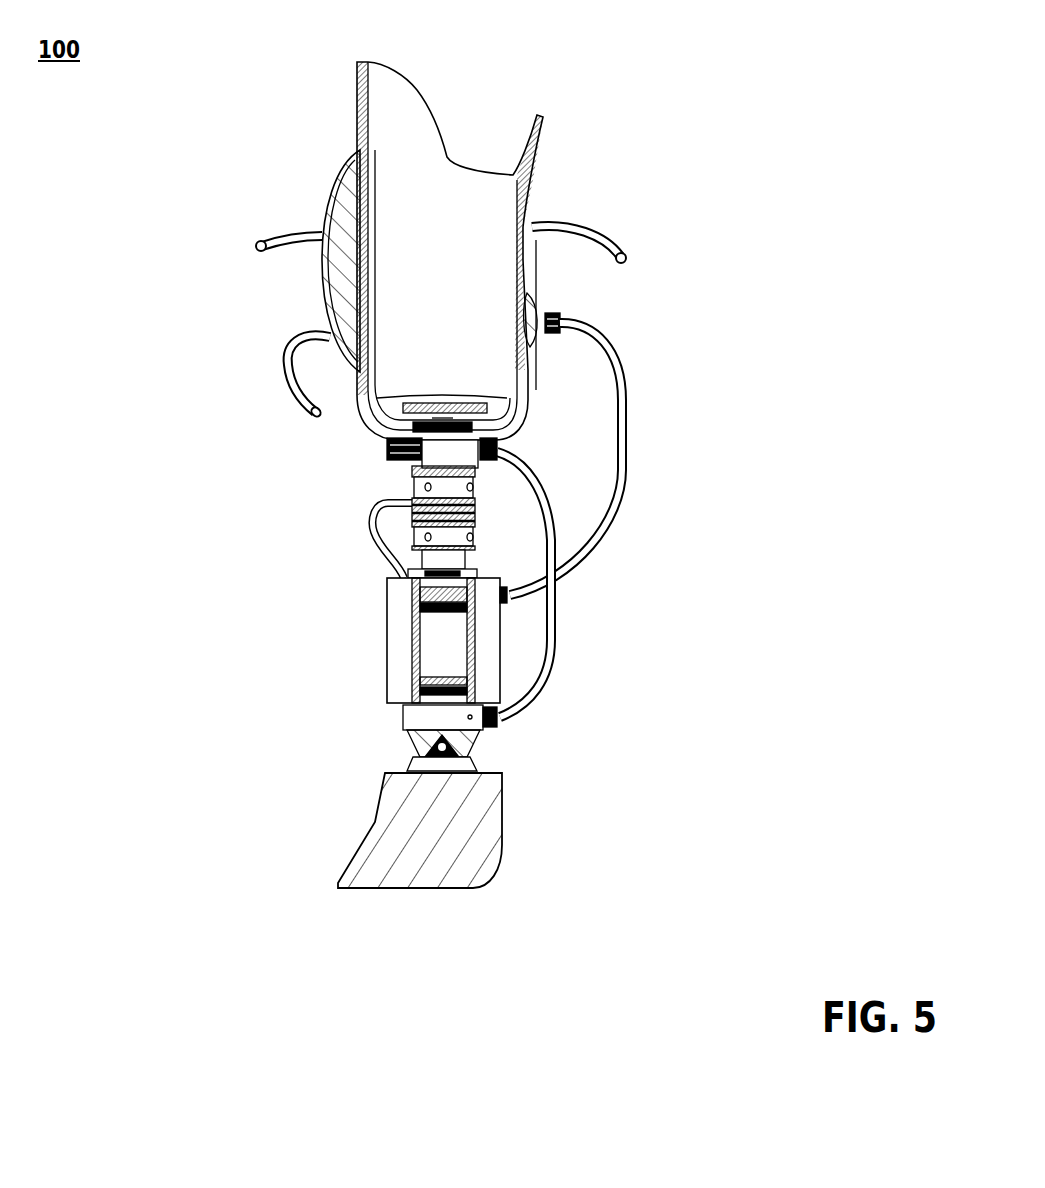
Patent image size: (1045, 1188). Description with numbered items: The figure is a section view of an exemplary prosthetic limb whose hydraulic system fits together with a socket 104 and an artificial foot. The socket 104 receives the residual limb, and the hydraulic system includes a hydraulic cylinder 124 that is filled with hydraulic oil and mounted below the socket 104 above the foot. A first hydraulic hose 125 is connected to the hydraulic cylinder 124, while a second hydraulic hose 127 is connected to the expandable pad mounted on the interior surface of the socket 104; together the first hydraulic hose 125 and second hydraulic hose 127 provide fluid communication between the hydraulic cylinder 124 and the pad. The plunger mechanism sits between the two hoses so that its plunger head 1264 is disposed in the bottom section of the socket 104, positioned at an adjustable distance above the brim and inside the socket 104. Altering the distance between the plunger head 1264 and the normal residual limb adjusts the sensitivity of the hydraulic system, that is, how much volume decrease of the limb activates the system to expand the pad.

The socket 104 is at (360, 110).
The hydraulic cylinder 124 is at (387, 640).
The first hydraulic hose 125 is at (548, 646).
The second hydraulic hose 127 is at (283, 372).
The plunger head 1264 is at (403, 407).